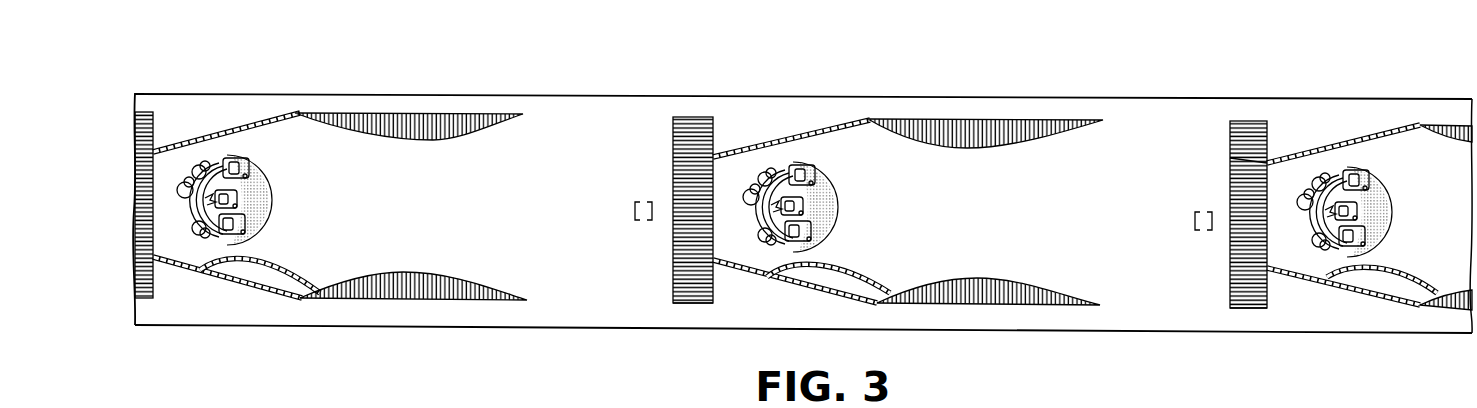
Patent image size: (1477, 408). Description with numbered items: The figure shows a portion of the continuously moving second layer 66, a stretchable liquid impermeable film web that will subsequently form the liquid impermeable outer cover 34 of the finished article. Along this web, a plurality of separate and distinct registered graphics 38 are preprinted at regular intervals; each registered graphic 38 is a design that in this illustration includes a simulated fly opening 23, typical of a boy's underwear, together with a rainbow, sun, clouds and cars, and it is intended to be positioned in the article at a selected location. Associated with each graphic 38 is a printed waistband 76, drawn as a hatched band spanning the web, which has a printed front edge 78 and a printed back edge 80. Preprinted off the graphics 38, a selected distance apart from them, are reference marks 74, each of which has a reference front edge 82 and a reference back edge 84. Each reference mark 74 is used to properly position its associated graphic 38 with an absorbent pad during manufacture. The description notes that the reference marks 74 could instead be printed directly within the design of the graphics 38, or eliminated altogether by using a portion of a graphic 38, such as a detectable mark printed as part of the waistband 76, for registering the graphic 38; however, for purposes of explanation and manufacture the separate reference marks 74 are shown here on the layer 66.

The simulated fly opening 23 is at (862, 252).
The liquid impermeable outer cover 34 is at (580, 106).
The registered graphic 38 is at (296, 185).
The continuously moving second layer 66 is at (633, 123).
The reference mark 74 is at (624, 231).
The printed waistband 76 is at (713, 103).
The printed front edge 78 is at (1230, 158).
The printed back edge 80 is at (713, 288).
The reference front edge 82 is at (633, 207).
The reference back edge 84 is at (655, 212).